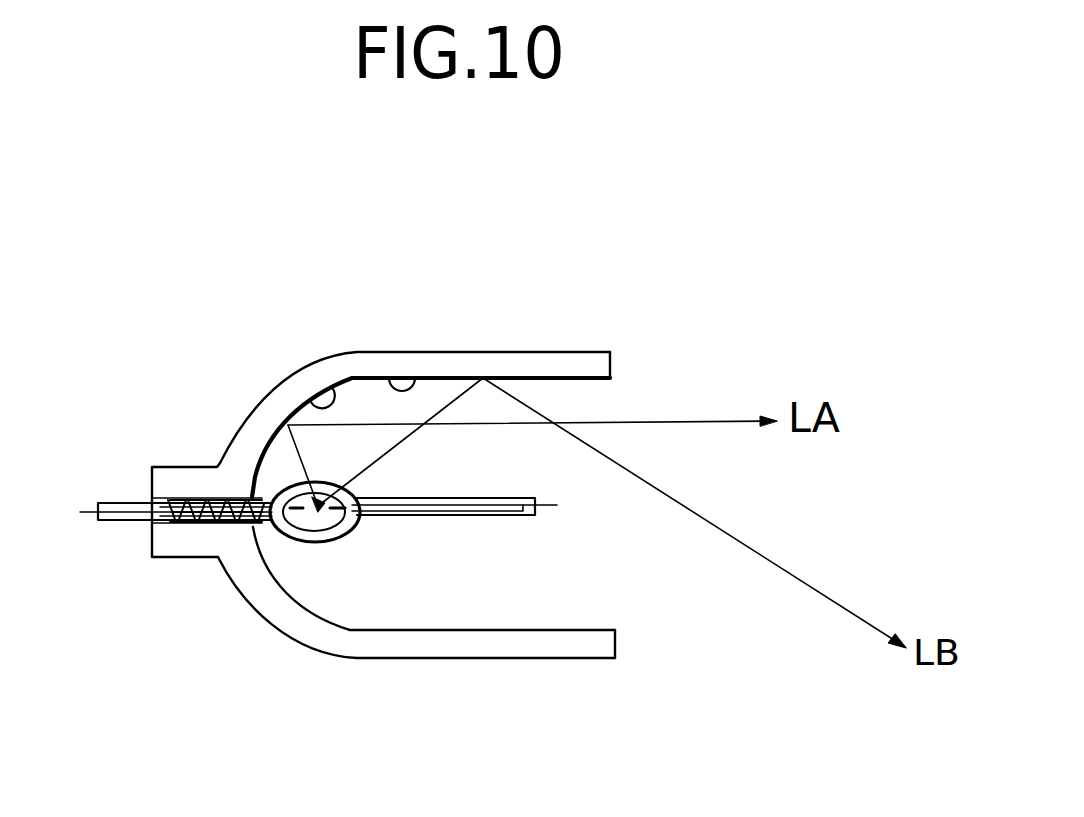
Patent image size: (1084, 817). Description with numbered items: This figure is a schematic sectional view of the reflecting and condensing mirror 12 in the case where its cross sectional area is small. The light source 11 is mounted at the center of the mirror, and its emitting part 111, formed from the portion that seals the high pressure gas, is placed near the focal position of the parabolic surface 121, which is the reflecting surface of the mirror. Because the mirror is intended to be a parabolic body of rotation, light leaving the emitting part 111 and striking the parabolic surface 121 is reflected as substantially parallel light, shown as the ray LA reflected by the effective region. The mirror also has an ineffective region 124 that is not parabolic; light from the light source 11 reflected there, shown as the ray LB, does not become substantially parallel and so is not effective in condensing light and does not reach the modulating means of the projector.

The light source 11 is at (303, 547).
The emitting part 111 is at (347, 532).
The reflecting and condensing mirror 12 is at (232, 411).
The parabolic surface 121 is at (311, 400).
The ineffective region 124 is at (417, 380).